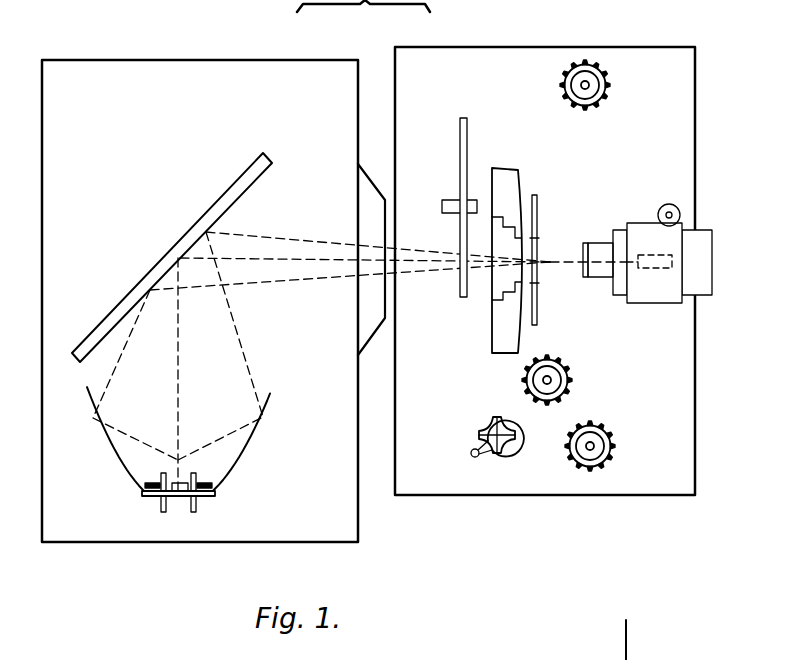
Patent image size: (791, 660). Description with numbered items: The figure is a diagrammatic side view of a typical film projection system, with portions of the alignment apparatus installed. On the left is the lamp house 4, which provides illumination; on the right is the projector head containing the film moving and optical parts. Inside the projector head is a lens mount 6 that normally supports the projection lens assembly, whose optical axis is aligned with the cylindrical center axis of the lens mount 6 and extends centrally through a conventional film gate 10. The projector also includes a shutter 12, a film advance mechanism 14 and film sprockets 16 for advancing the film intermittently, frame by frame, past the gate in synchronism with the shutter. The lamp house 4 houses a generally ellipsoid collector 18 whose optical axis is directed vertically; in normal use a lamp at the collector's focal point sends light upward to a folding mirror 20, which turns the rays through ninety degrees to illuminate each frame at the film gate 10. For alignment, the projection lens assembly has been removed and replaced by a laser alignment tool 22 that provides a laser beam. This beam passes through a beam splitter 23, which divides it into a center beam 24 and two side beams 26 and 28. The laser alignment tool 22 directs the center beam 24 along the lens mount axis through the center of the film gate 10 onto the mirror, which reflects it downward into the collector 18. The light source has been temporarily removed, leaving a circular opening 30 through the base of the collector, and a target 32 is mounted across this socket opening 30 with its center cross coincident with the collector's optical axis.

The lamp house 4 is at (77, 44).
The lens mount 6 is at (660, 304).
The film gate 10 is at (502, 166).
The shutter 12 is at (467, 125).
The film advance mechanism 14 is at (458, 461).
The film sprockets 16 is at (607, 80).
The ellipsoid collector 18 is at (240, 463).
The folding mirror 20 is at (255, 181).
The laser alignment tool 22 is at (702, 231).
The beam splitter 23 is at (585, 242).
The center beam 24 is at (285, 259).
The side beam 26 is at (320, 279).
The side beam 28 is at (298, 238).
The circular opening 30 is at (207, 497).
The target 32 is at (143, 497).